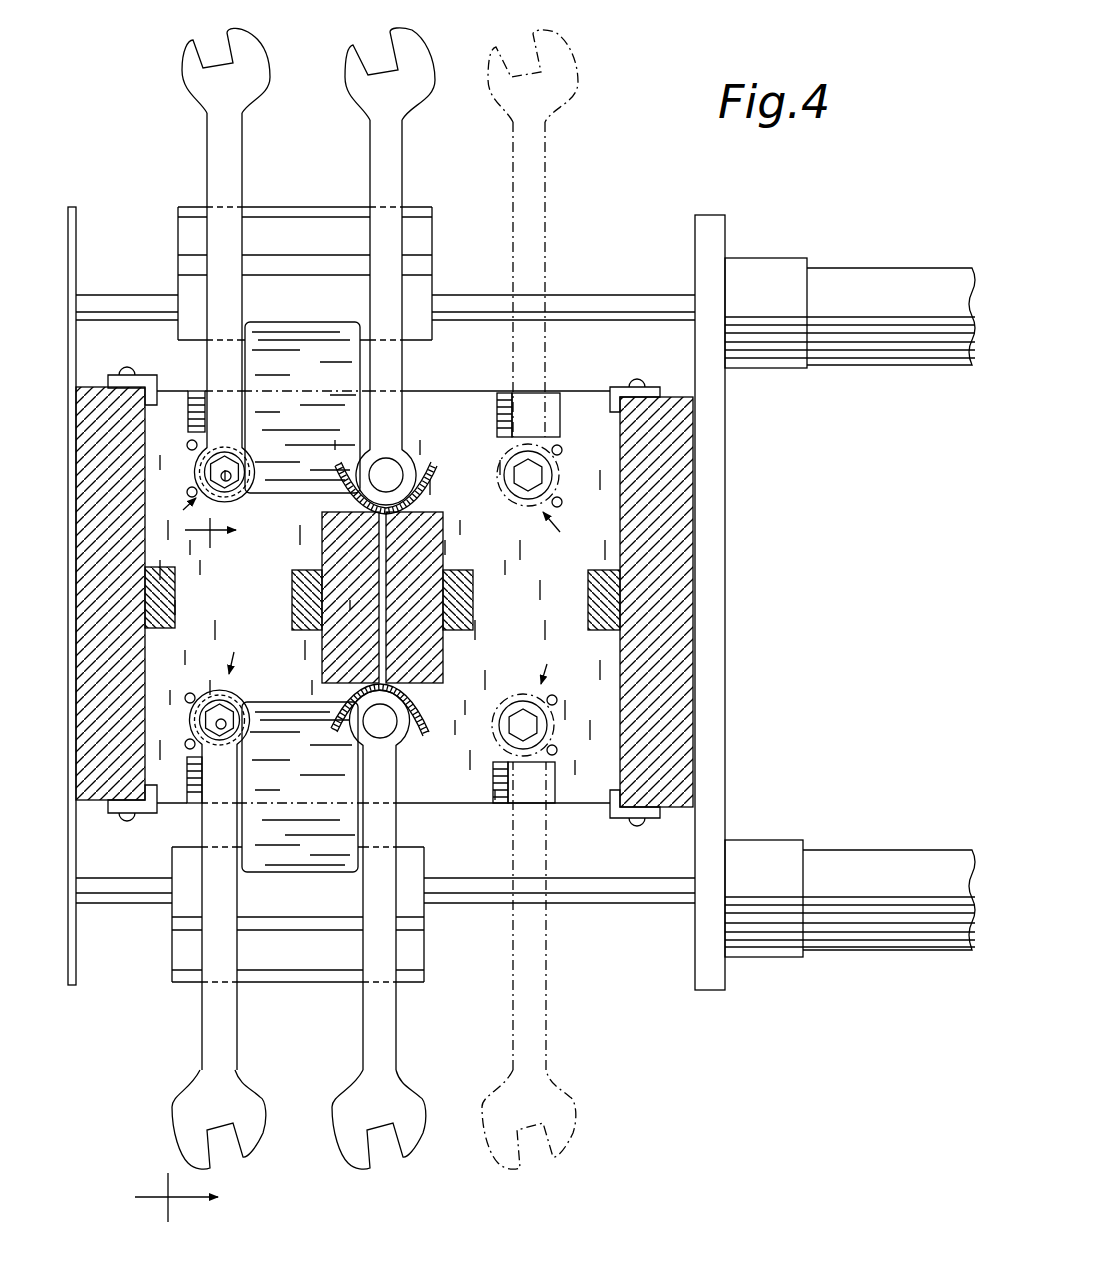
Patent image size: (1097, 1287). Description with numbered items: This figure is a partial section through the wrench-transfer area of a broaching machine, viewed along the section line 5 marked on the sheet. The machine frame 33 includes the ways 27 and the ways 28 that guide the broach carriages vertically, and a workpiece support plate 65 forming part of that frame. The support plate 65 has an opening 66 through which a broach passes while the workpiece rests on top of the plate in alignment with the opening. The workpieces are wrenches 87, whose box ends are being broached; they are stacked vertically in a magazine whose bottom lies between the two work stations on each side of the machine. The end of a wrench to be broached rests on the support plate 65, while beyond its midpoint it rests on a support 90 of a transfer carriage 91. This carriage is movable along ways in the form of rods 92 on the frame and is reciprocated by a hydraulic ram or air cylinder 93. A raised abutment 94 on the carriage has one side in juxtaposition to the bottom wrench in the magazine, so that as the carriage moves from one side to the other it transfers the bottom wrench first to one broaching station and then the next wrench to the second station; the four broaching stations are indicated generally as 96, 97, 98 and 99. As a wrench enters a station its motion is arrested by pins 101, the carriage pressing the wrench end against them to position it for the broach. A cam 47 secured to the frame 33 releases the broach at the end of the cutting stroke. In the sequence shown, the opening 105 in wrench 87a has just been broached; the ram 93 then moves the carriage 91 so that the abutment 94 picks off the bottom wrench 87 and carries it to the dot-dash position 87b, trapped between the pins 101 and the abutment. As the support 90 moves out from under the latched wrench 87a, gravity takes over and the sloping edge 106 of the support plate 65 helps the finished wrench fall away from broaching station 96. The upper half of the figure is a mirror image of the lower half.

The section line 5- 5 is at (197, 870).
The ways 27 is at (292, 587).
The ways 28 is at (588, 585).
The machine frame 33 is at (696, 568).
The cam 47 is at (152, 382).
The workpiece support plate 65 is at (466, 669).
The opening 66 is at (246, 468).
The wrench 87 is at (402, 158).
The wrench 87a is at (207, 150).
The wrench 87b is at (542, 190).
The support 90 is at (312, 207).
The transfer carriage 91 is at (170, 226).
The rods 92 is at (608, 300).
The hydraulic ram or air cylinder 93 is at (878, 318).
The raised abutment 94 is at (286, 400).
The broaching station 96 is at (220, 651).
The broaching station 97 is at (547, 662).
The broaching station 98 is at (174, 511).
The broaching station 99 is at (565, 532).
The pins 101 is at (188, 492).
The opening 105 is at (231, 479).
The sloping edge 106 is at (197, 391).